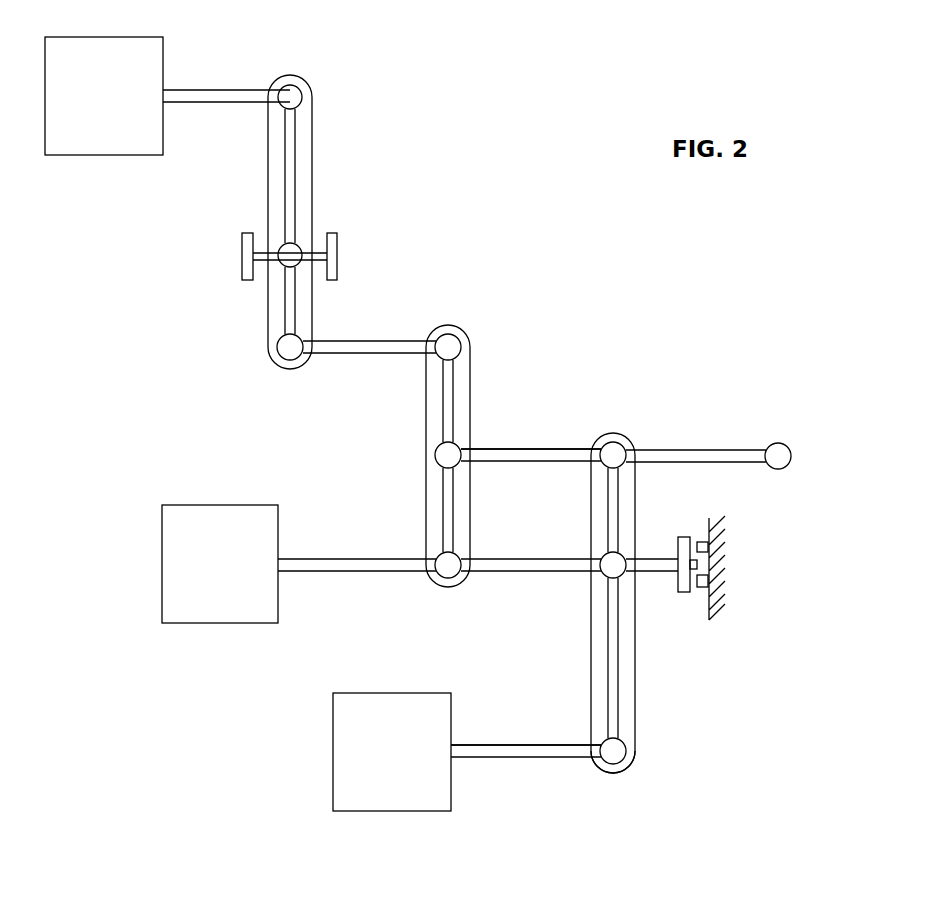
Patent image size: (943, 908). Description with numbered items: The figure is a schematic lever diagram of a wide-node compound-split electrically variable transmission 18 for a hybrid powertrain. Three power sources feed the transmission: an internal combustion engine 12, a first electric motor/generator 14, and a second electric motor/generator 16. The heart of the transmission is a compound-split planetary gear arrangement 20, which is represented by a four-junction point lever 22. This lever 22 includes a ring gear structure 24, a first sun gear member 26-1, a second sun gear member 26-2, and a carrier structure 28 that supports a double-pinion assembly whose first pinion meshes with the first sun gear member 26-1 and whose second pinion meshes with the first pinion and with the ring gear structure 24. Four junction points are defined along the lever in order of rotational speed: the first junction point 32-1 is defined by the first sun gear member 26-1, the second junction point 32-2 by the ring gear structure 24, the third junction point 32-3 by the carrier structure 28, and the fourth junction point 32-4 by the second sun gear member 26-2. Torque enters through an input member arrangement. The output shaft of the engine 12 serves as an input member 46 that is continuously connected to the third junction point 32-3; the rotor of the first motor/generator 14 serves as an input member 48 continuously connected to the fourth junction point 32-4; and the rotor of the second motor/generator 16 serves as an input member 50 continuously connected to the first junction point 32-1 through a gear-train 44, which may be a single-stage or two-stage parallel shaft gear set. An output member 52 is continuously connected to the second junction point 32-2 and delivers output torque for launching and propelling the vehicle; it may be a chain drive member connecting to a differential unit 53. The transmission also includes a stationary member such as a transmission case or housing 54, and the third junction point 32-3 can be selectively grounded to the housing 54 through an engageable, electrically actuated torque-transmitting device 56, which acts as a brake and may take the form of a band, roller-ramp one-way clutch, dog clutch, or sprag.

The internal combustion engine 12 is at (162, 568).
The first electric motor/generator 14 is at (395, 812).
The second electric motor/generator 16 is at (103, 156).
The electrically variable transmission 18 is at (512, 145).
The compound-split planetary gear arrangement 20 is at (558, 353).
The four-junction point lever 22 is at (335, 388).
The ring gear structure 24 is at (540, 463).
The first sun gear member 26-1 is at (469, 345).
The second sun gear member 26-2 is at (637, 757).
The carrier structure 28 is at (549, 558).
The first junction point 32-1 is at (466, 318).
The second junction point 32-2 is at (518, 446).
The third junction point 32-3 is at (548, 576).
The fourth junction point 32-4 is at (592, 772).
The gear-train 44 is at (346, 258).
The input member 46 is at (348, 573).
The input member 48 is at (530, 760).
The input member 50 is at (212, 89).
The output member 52 is at (681, 450).
The differential unit 53 is at (792, 454).
The housing 54 is at (712, 605).
The torque-transmitting device 56 is at (682, 593).